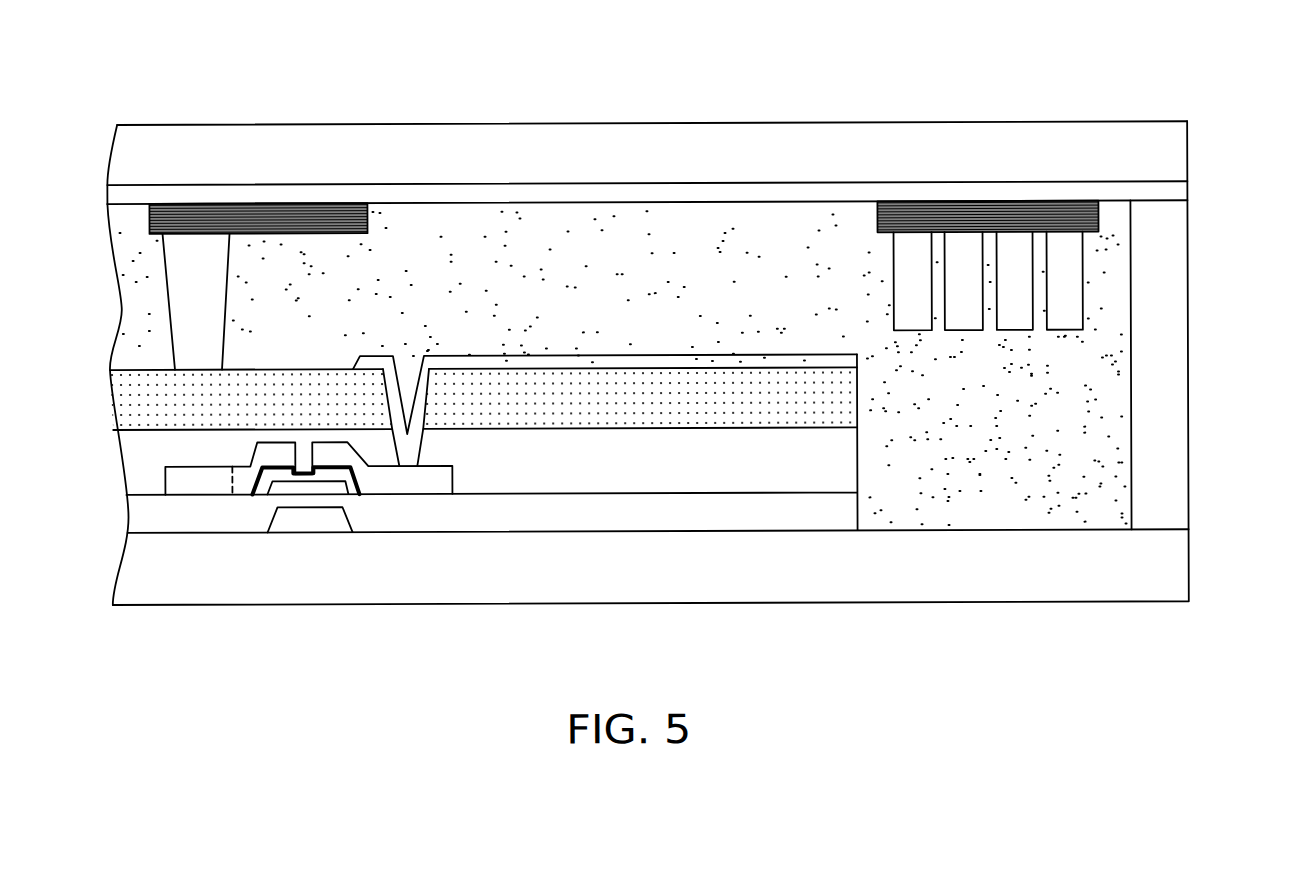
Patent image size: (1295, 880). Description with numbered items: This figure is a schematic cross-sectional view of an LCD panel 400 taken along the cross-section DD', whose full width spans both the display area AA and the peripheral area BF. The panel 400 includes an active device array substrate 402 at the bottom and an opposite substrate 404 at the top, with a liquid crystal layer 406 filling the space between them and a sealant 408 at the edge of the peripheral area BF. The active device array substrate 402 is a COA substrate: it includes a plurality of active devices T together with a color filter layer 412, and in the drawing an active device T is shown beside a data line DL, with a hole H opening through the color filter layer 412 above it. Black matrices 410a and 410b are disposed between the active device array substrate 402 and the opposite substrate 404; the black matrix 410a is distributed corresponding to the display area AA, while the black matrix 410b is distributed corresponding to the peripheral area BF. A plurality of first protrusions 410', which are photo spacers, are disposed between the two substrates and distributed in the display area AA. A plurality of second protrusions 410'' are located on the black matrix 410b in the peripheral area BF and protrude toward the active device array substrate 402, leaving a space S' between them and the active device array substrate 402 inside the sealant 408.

The LCD panel 400 is at (1189, 659).
The active device array substrate 402 is at (90, 360).
The opposite substrate 404 is at (88, 125).
The liquid crystal layer 406 is at (143, 252).
The sealant 408 is at (1172, 402).
The black matrix 410a is at (372, 227).
The black matrix 410b is at (1100, 218).
The first protrusions 410' is at (240, 301).
The second protrusions 410'' is at (1079, 280).
The color filter layer 412 is at (540, 385).
The contact hole H is at (407, 372).
The active devices T is at (250, 449).
The data line DL is at (180, 485).
The gap space S' is at (1053, 380).
The display area AA is at (864, 106).
The peripheral area BF is at (1084, 106).
The cross-section D-D' DD' is at (652, 37).